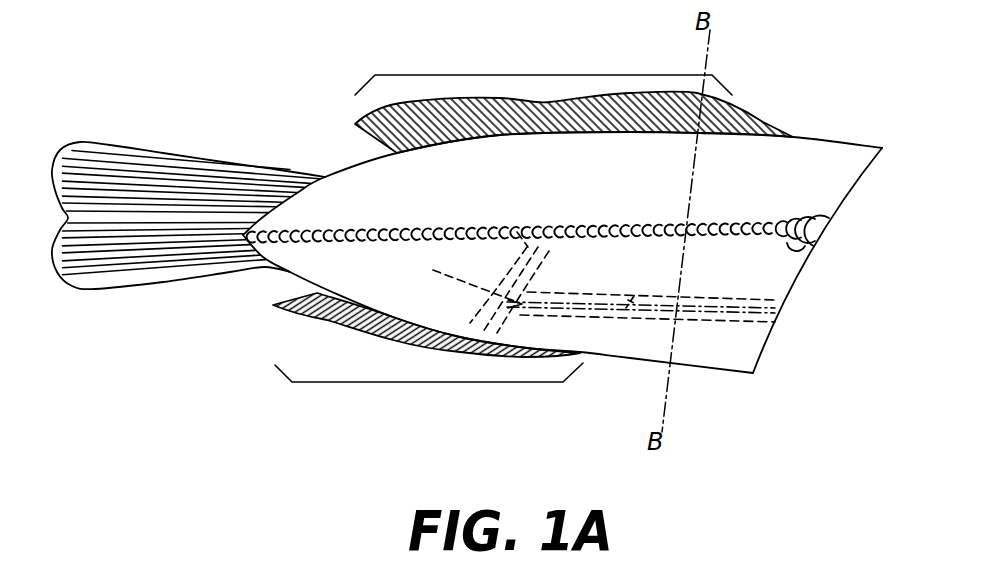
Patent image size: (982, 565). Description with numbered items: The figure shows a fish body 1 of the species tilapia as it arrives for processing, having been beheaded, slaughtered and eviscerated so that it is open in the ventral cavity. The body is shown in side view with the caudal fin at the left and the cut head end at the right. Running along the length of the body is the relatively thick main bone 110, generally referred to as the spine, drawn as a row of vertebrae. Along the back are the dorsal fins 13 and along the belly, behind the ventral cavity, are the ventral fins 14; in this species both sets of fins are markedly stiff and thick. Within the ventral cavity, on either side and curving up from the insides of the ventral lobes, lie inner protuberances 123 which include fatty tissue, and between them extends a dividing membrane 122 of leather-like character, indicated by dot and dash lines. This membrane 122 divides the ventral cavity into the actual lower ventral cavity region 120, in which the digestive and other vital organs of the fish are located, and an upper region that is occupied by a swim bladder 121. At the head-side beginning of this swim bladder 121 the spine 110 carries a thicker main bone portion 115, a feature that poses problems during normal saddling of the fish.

The fish body 1 is at (820, 140).
The dorsal fins 13 is at (545, 75).
The ventral fins 14 is at (428, 382).
The main bone 110 is at (450, 232).
The thicker main bone portion 115 is at (788, 258).
The lower ventral cavity region 120 is at (660, 351).
The swim bladder 121 is at (588, 277).
The dividing membrane 122 is at (744, 323).
The inner protuberances 123 is at (634, 296).